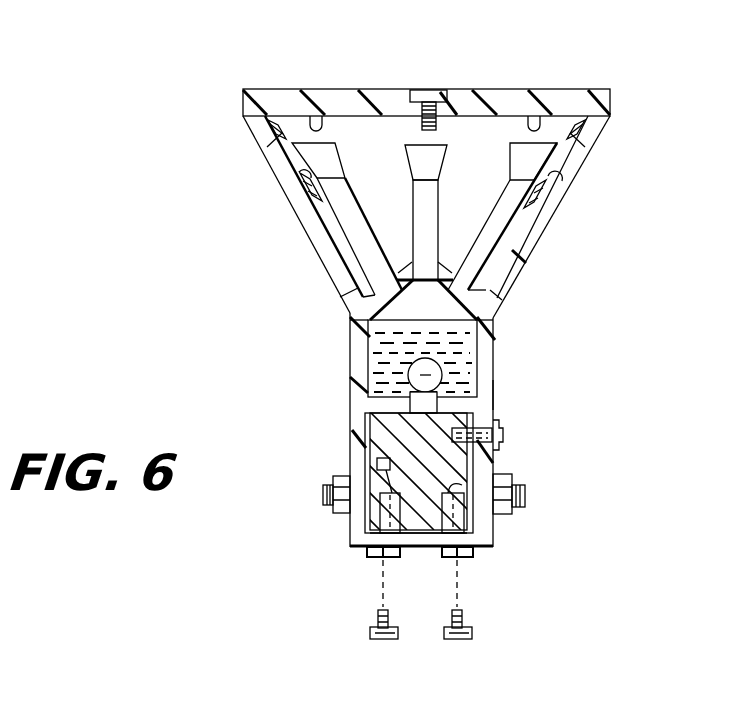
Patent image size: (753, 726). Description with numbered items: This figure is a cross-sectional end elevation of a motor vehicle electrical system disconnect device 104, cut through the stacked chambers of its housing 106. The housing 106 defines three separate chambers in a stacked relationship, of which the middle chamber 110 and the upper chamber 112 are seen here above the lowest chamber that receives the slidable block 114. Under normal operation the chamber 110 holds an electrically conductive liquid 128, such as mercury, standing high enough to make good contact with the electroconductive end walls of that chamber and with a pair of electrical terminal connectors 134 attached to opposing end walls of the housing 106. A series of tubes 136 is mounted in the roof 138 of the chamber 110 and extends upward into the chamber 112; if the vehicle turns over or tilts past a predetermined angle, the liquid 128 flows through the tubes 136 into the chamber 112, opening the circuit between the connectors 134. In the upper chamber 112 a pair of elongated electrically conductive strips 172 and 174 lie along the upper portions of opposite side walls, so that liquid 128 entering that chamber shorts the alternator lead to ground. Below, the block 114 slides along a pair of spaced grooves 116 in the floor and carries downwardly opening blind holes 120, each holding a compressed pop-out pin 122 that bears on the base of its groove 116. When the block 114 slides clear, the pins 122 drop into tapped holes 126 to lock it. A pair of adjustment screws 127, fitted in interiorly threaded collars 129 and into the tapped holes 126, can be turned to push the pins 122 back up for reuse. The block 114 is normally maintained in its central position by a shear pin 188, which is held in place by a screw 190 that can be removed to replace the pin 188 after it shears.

The motor vehicle electrical system disconnect device 104 is at (275, 236).
The housing 106 is at (537, 245).
The chamber 110 is at (352, 313).
The chamber 112 is at (498, 142).
The block 114 is at (370, 415).
The grooves 116 is at (362, 542).
The blind holes 120 is at (330, 525).
The pop-out pin 122 is at (368, 455).
The tapped holes 126 is at (352, 566).
The adjustment screws 127 is at (375, 622).
The electrically conductive liquid 128 is at (497, 318).
The interiorly threaded collars 129 is at (373, 560).
The electrical terminal connectors 134 is at (445, 370).
The tubes 136 is at (413, 198).
The roof 138 is at (447, 253).
The electrically conductive strip 172 is at (278, 118).
The electrically conductive strip 174 is at (300, 174).
The shear pin 188 is at (500, 395).
The screw 190 is at (505, 420).